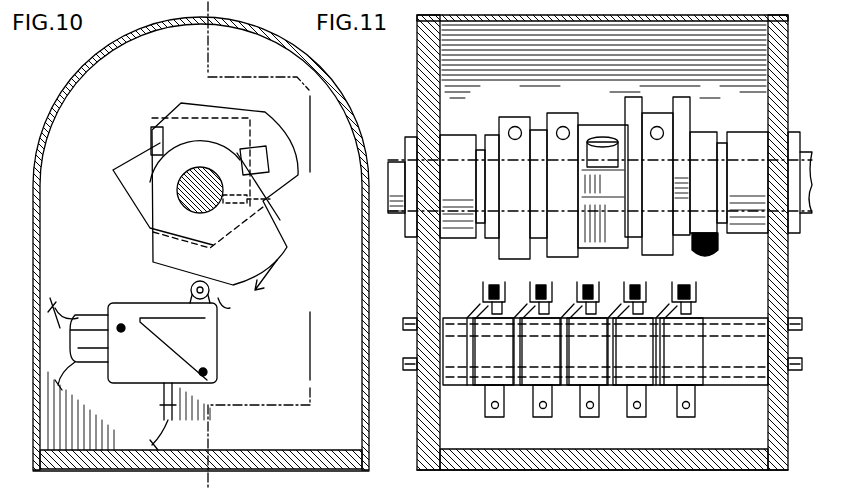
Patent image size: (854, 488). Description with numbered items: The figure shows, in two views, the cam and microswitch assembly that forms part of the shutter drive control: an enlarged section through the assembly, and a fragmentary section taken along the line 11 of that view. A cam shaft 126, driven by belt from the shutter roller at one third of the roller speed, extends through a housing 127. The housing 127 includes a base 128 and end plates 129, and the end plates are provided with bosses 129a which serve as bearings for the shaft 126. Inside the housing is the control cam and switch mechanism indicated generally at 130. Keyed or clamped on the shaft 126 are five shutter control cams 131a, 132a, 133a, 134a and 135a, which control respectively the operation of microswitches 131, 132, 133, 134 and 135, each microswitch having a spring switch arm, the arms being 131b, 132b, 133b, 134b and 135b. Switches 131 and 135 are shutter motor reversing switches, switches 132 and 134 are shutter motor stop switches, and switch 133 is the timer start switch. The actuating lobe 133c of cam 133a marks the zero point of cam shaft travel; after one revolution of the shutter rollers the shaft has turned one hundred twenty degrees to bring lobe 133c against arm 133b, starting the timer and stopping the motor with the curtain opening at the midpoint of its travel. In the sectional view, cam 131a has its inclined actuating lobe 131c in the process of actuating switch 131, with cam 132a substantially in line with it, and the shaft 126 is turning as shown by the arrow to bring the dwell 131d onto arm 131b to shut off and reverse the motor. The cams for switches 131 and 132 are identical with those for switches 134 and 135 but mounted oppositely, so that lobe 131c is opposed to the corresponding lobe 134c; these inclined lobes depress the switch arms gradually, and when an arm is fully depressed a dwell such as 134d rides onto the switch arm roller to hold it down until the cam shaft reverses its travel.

In FIG. 10, the section line 11— 11 is at (202, 16).
In FIG. 10, the cam shaft 126 is at (177, 190).
In FIG. 11, the cam shaft 126 is at (394, 165).
In FIG. 10, the housing 127 is at (322, 96).
In FIG. 11, the housing 127 is at (574, 22).
In FIG. 10, the base 128 is at (330, 452).
In FIG. 11, the base 128 is at (664, 452).
In FIG. 11, the end plates 129 is at (442, 438).
In FIG. 11, the bosses 129a is at (452, 134).
In FIG. 11, the control cam and switch mechanism 130 is at (502, 103).
In FIG. 10, the microswitch 131 is at (210, 340).
In FIG. 11, the microswitch 131 is at (605, 367).
In FIG. 10, the shutter control cam 131a is at (284, 250).
In FIG. 11, the shutter control cam 131a is at (512, 118).
In FIG. 10, the spring switch arm 131b is at (190, 290).
In FIG. 11, the spring switch arm 131b is at (478, 290).
In FIG. 10, the actuating lobe 131c is at (244, 310).
In FIG. 10, the dwell 131d is at (298, 275).
In FIG. 11, the microswitch 132 is at (540, 367).
In FIG. 11, the shutter control cam 132a is at (562, 114).
In FIG. 11, the spring switch arm 132b is at (525, 290).
In FIG. 11, the microswitch 133 is at (587, 367).
In FIG. 10, the shutter control cam 133a is at (134, 160).
In FIG. 11, the shutter control cam 133a is at (605, 122).
In FIG. 11, the spring switch arm 133b is at (572, 290).
In FIG. 10, the actuating lobe 133c is at (113, 170).
In FIG. 11, the microswitch 134 is at (633, 367).
In FIG. 10, the shutter control cam 134a is at (283, 187).
In FIG. 11, the shutter control cam 134a is at (650, 112).
In FIG. 11, the spring switch arm 134b is at (619, 288).
In FIG. 10, the actuating lobe 134c is at (218, 104).
In FIG. 10, the dwell 134d is at (285, 135).
In FIG. 11, the microswitch 135 is at (681, 367).
In FIG. 11, the shutter control cam 135a is at (698, 130).
In FIG. 11, the spring switch arm 135b is at (684, 286).